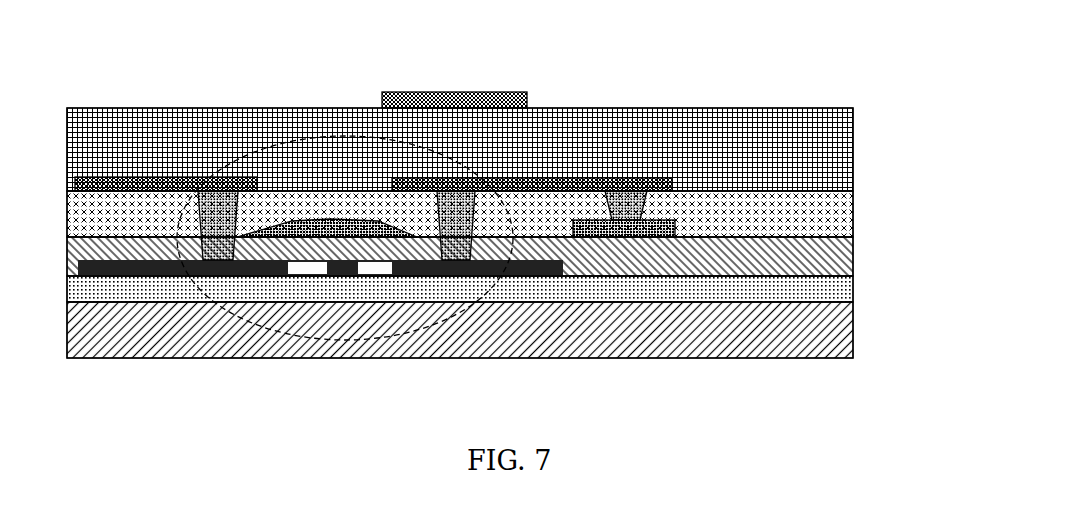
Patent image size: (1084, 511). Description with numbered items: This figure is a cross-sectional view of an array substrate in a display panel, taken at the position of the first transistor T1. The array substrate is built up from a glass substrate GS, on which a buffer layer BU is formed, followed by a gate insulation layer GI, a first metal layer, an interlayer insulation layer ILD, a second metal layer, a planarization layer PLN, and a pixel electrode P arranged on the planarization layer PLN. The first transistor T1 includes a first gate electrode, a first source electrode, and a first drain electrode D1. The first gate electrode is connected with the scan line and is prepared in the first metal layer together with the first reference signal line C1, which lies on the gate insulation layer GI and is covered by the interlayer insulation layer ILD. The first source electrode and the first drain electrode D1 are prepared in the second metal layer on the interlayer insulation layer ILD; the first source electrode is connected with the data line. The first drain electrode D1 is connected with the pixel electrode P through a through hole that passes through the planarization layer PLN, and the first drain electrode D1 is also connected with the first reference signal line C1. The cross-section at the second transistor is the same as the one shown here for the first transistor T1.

The first transistor T1 is at (272, 150).
The first drain electrode D1 is at (418, 176).
The pixel electrode P is at (460, 92).
The planarization layer PLN is at (833, 152).
The interlayer insulation layer ILD is at (842, 220).
The gate insulation layer GI is at (853, 258).
The buffer layer BU is at (840, 288).
The glass substrate GS is at (853, 330).
The first reference signal line C1 is at (628, 234).